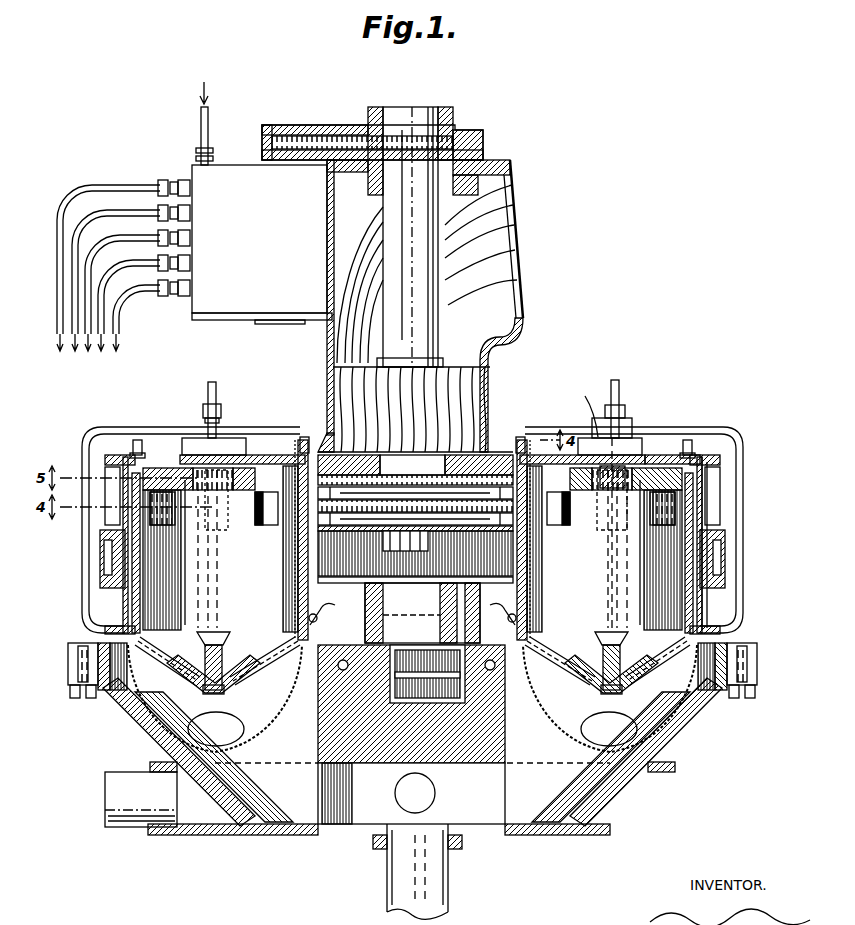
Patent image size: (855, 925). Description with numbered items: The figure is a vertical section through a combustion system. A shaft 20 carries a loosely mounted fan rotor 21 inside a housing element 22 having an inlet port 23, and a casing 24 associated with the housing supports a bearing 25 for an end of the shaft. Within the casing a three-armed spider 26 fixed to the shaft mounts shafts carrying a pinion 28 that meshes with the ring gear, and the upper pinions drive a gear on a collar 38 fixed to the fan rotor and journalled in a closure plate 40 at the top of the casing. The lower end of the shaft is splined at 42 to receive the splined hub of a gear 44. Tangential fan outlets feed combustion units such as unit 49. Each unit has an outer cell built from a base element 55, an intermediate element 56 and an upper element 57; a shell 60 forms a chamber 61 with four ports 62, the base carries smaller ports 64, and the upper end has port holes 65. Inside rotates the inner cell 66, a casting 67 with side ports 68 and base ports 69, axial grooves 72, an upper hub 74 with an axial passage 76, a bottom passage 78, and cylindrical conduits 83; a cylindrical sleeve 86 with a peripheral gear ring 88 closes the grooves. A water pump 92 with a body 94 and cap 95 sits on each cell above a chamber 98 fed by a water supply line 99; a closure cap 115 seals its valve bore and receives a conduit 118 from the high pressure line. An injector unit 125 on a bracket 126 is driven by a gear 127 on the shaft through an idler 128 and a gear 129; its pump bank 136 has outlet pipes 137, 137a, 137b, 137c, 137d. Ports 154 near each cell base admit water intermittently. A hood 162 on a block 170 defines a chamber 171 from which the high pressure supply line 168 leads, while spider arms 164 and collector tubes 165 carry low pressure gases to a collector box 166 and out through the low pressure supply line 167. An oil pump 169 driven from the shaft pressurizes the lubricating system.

The shaft 20 is at (418, 107).
The fan rotor 21 is at (492, 380).
The housing element 22 is at (325, 343).
The inlet port 23 is at (512, 264).
The casing 24 is at (298, 548).
The bearing 25 is at (372, 577).
The spider 26 is at (415, 503).
The pinion 28 is at (300, 516).
The collar 38 is at (393, 456).
The closure plate 40 is at (460, 440).
The splined portion 42 is at (422, 608).
The gear 44 is at (503, 609).
The combustion unit 49 is at (331, 609).
The base element 55 is at (128, 595).
The intermediate element 56 is at (100, 555).
The upper element 57 is at (105, 459).
The shell 60 is at (705, 478).
The chamber 61 is at (710, 492).
The ports 62 is at (123, 490).
The smaller ports 64 is at (110, 698).
The port holes 65 is at (412, 508).
The inner cell 66 is at (415, 549).
The casting 67 is at (146, 588).
The ports 68 is at (668, 530).
The ports 69 is at (226, 633).
The grooves 72 is at (110, 632).
The hub 74 is at (628, 447).
The axial passage 76 is at (615, 470).
The passage 78 is at (140, 750).
The cylindrical conduits 83 is at (256, 500).
The cylindrical sleeve 86 is at (112, 525).
The peripheral gear ring 88 is at (108, 572).
The water pump 92 is at (248, 431).
The body 94 is at (268, 443).
The cap 95 is at (579, 407).
The chamber 98 is at (105, 446).
The water supply line 99 is at (140, 442).
The closure cap 115 is at (218, 409).
The conduit 118 is at (211, 390).
The injector unit 125 is at (178, 150).
The bracket 126 is at (327, 245).
The gear 127 is at (478, 130).
The idler 128 is at (370, 122).
The gear 129 is at (270, 125).
The pump bank 136 is at (262, 244).
The outlet pipe 137 is at (160, 184).
The outlet pipe 137a is at (160, 210).
The outlet pipe 137b is at (160, 235).
The outlet pipe 137c is at (160, 260).
The outlet pipe 137d is at (160, 285).
The ports 154 is at (75, 650).
The hood 162 is at (672, 748).
The arms 164 is at (280, 730).
The collector tubes 165 is at (258, 836).
The collector box 166 is at (372, 824).
The low pressure supply line 167 is at (450, 882).
The high pressure supply line 168 is at (136, 830).
The oil pump 169 is at (411, 734).
The block 170 is at (125, 722).
The chamber 171 is at (628, 798).